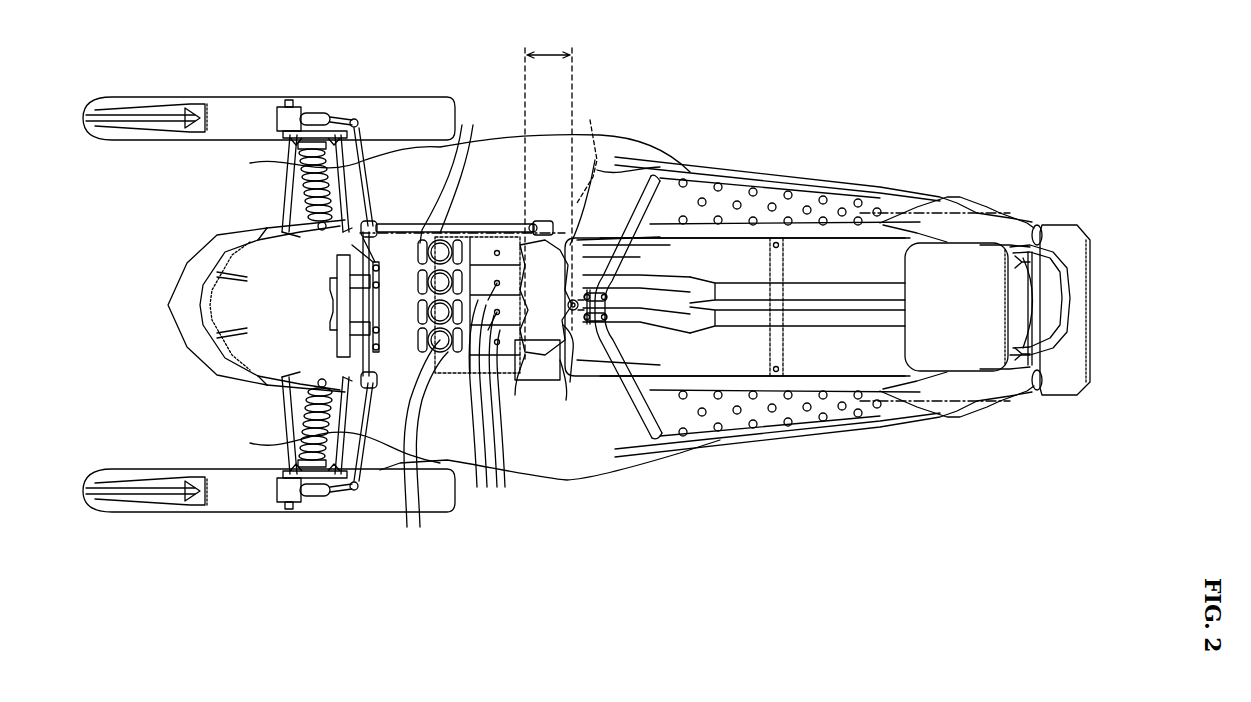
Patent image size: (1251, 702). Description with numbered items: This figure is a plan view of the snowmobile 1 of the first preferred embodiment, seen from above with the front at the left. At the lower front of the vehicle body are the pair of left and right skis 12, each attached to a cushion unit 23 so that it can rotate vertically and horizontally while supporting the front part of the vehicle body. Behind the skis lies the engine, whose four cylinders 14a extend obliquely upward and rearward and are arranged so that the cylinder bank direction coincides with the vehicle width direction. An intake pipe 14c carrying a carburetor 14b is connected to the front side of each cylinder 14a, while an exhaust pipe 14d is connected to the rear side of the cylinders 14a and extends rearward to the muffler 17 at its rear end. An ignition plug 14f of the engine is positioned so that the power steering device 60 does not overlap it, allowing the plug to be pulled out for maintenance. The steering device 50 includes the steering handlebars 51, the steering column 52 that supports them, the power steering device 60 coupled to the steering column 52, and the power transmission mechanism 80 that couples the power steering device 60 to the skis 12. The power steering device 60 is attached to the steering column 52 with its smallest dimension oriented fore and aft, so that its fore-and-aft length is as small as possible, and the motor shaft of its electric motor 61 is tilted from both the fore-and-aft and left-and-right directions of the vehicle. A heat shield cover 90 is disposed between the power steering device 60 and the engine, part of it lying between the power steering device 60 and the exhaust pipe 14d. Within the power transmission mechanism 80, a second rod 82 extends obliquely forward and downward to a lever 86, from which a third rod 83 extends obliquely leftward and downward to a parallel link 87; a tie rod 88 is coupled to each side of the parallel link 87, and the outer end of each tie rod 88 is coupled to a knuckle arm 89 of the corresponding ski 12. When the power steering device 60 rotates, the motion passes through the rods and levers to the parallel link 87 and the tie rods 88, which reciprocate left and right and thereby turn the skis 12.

The snowmobile 1 is at (911, 84).
The ski 12 is at (158, 97).
The cylinder 14a is at (488, 410).
The carburetor 14b is at (445, 333).
The intake pipe 14c is at (463, 220).
The exhaust pipe 14d is at (568, 255).
The ignition plug 14f is at (497, 253).
The muffler 17 is at (960, 243).
The cushion unit 23 is at (300, 164).
The steering device 50 is at (669, 201).
The steering handlebars 51 is at (627, 365).
The steering column 52 is at (593, 385).
The power steering device 60 is at (540, 330).
The electric motor 61 is at (570, 257).
The power transmission mechanism 80 is at (325, 309).
The second rod 82 is at (407, 220).
The third rod 83 is at (363, 238).
The lever 86 is at (363, 180).
The parallel link 87 is at (342, 312).
The tie rod 88 is at (317, 187).
The knuckle arm 89 is at (348, 120).
The heat shield cover 90 is at (537, 380).